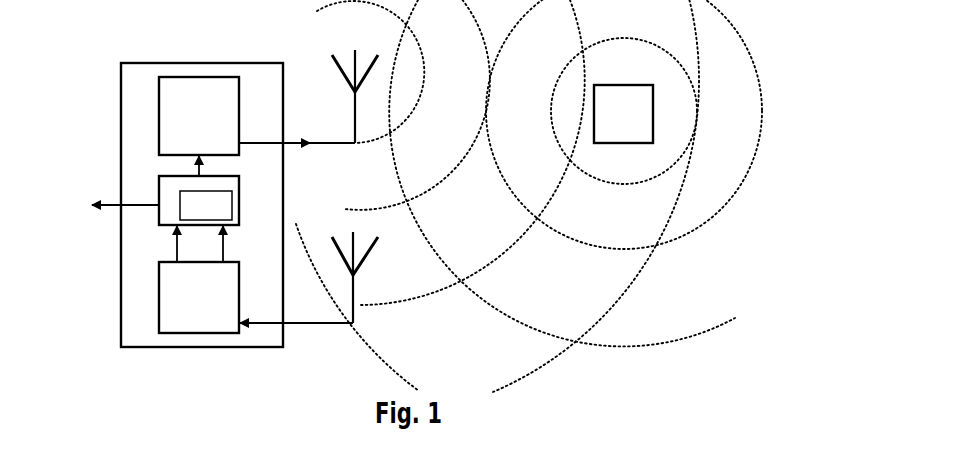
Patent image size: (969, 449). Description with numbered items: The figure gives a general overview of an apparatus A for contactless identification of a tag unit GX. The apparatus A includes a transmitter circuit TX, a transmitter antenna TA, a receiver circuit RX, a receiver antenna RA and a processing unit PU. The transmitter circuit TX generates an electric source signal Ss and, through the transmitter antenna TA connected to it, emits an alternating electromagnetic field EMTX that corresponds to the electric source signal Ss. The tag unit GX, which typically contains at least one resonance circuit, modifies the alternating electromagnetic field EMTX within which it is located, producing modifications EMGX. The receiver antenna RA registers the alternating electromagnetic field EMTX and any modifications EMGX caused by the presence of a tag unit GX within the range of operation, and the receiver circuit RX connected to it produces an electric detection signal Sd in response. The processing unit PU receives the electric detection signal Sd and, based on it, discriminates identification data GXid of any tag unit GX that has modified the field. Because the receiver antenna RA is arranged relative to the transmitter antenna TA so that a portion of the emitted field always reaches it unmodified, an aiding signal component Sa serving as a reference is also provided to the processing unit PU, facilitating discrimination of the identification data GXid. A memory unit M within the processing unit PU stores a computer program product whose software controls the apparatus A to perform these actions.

The apparatus A is at (202, 178).
The transmitter circuit TX is at (138, 116).
The processing unit PU is at (144, 187).
The memory unit M is at (206, 205).
The receiver circuit RX is at (139, 297).
The transmitter antenna TA is at (324, 78).
The receiver antenna RA is at (309, 257).
The tag unit GX is at (671, 114).
The electric source signal Ss is at (297, 129).
The electric detection signal Sd is at (158, 244).
The aiding signal component Sa is at (241, 244).
The identification data GXid is at (94, 205).
The alternating electromagnetic field EMTX is at (508, 196).
The modifications of the alternating electromagnetic field EMGX is at (529, 195).